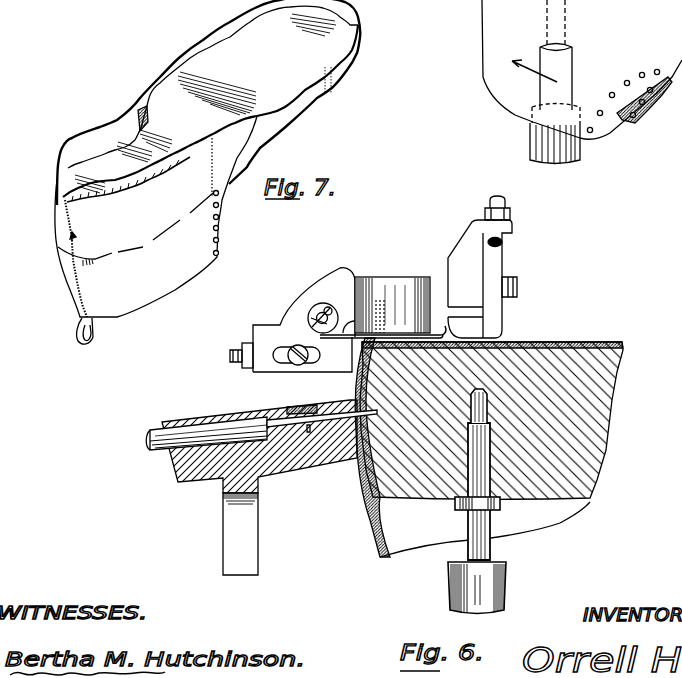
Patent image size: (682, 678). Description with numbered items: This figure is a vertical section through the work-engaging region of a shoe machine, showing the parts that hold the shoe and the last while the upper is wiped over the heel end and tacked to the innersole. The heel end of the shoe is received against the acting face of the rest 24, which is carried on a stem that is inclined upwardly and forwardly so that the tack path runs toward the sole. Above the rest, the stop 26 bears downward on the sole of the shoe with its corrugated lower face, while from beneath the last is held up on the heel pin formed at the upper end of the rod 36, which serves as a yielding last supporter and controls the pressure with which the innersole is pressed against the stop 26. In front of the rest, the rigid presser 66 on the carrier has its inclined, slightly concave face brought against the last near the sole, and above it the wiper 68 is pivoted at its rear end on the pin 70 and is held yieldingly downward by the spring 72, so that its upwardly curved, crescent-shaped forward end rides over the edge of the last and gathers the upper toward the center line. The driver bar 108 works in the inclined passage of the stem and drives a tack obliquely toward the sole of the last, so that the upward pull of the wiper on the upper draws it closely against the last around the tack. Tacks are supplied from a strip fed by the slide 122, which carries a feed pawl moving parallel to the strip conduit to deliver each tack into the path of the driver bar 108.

The rest 24 is at (353, 455).
The stop 26 is at (495, 313).
The rod 36 is at (492, 550).
The presser 66 is at (353, 347).
The wiper 68 is at (440, 322).
The pin 70 is at (320, 308).
The spring 72 is at (378, 317).
The driver bar 108 is at (148, 445).
The slide 122 is at (297, 407).